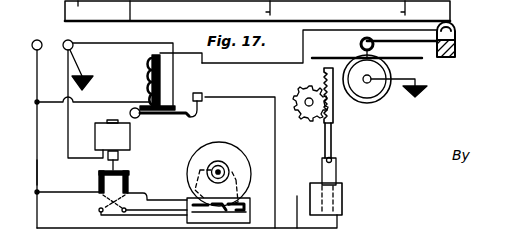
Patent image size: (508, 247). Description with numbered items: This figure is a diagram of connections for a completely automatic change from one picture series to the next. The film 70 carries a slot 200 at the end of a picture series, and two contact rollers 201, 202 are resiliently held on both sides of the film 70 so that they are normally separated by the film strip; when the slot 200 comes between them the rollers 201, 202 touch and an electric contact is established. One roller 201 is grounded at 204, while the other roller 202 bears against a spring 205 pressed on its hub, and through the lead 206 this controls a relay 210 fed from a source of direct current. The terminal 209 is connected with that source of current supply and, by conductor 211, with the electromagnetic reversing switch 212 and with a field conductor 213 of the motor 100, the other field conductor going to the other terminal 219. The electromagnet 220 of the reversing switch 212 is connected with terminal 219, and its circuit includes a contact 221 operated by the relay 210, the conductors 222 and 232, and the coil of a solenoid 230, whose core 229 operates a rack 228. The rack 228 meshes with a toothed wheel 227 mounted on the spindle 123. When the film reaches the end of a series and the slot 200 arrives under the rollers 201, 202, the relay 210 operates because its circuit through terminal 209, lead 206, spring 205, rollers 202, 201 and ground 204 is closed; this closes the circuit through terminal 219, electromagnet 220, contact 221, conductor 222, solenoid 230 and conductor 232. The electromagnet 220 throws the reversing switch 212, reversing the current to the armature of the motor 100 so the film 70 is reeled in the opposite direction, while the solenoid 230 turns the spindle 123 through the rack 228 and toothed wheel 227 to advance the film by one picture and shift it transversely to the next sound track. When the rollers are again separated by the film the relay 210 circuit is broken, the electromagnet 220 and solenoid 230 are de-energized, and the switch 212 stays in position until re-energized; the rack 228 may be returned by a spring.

The terminal 209 is at (37, 40).
The terminal 219 is at (71, 41).
The relay 210 is at (148, 86).
The lead 206 is at (250, 66).
The electromagnet 220 is at (97, 132).
The contact 221 is at (199, 113).
The conductor 211 is at (38, 173).
The field conductor 213 is at (147, 181).
The electromagnetic reversing switch 212 is at (97, 202).
The motor 100 is at (252, 139).
The spindle 123 is at (300, 107).
The circuit conductor 222 is at (293, 170).
The circuit conductor 232 is at (297, 203).
The slot 200 is at (298, 88).
The toothed wheel 227 is at (298, 119).
The rack 228 is at (335, 108).
The core 229 is at (339, 161).
The solenoid 230 is at (343, 206).
The contact roller 202 is at (359, 44).
The film 70 is at (418, 59).
The spring 205 is at (450, 28).
The contact roller 201 is at (380, 99).
The ground 204 is at (427, 96).